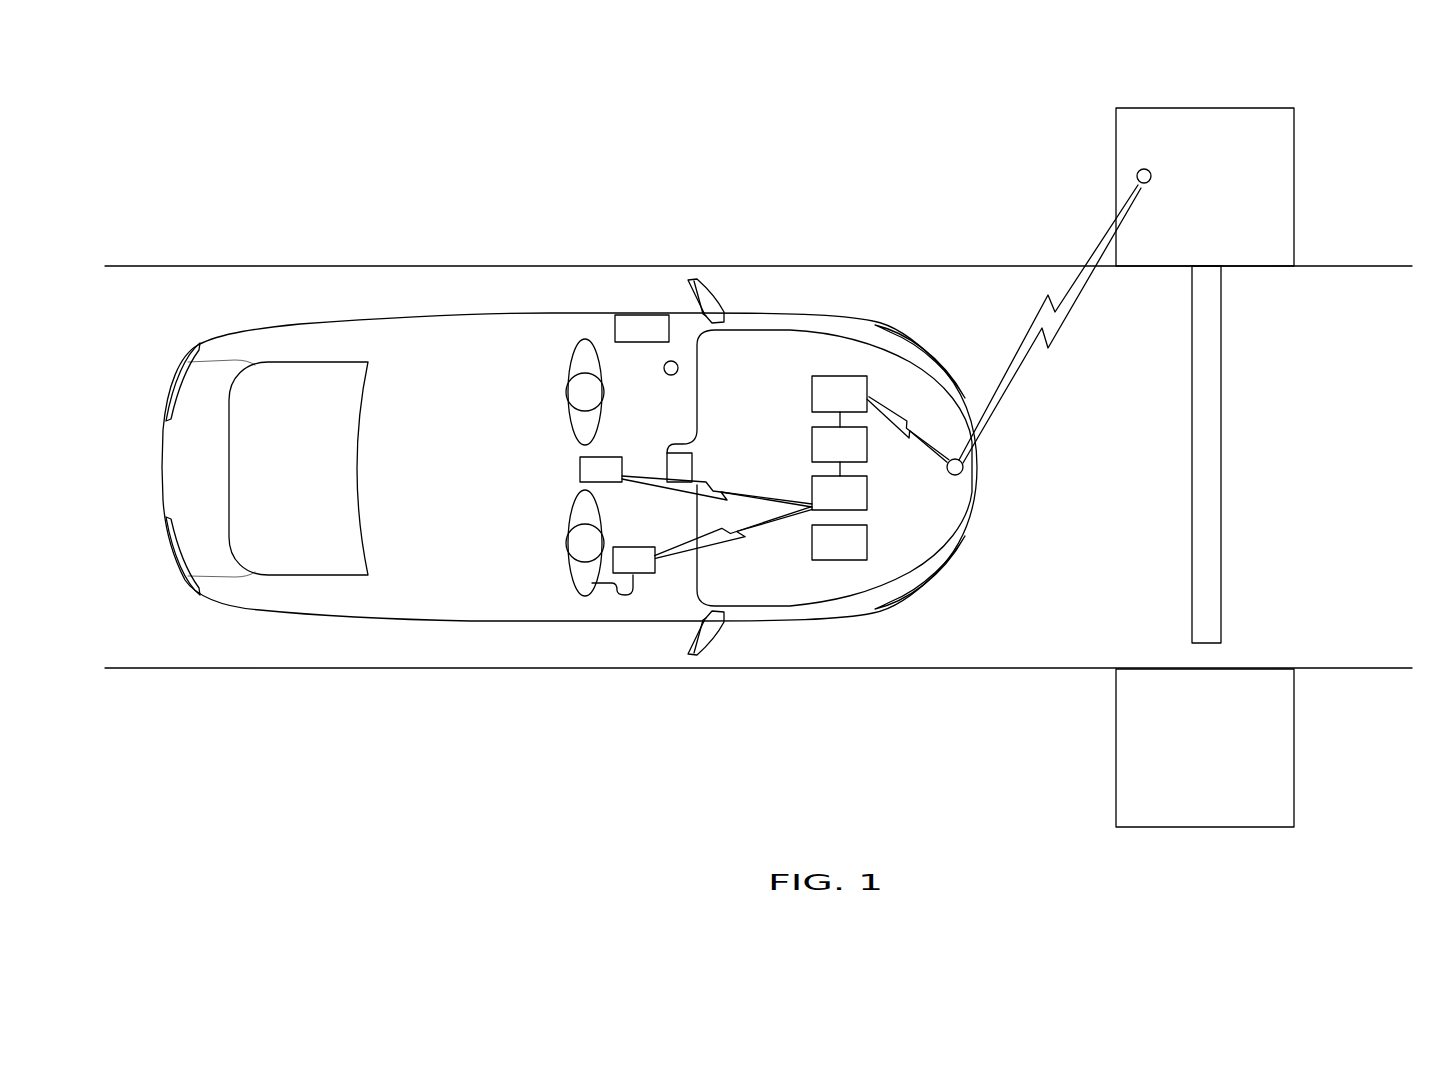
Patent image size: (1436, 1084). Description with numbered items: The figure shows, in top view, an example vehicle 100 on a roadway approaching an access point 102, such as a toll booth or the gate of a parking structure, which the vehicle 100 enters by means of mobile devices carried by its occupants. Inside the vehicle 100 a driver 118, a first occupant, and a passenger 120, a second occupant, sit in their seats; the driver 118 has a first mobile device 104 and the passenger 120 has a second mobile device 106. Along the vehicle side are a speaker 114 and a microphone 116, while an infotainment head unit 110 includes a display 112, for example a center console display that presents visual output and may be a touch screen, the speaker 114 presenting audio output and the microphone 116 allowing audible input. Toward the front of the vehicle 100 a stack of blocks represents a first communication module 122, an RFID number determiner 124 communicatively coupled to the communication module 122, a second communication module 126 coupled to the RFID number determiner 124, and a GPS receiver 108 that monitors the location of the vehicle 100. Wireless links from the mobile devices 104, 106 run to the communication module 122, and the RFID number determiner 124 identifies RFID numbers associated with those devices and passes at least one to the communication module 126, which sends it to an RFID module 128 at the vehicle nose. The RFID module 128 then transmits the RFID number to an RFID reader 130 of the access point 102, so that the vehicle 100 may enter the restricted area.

The vehicle 100 is at (175, 599).
The access point 102 is at (1333, 243).
The mobile device 104 is at (580, 468).
The mobile device 106 is at (640, 565).
The GPS receiver 108 is at (822, 554).
The infotainment head unit 110 is at (714, 389).
The display 112 is at (673, 463).
The speaker 114 is at (640, 326).
The microphone 116 is at (674, 361).
The driver 118 is at (567, 391).
The passenger 120 is at (567, 548).
The communication module 122 is at (822, 504).
The RFID number determiner 124 is at (822, 456).
The communication module 126 is at (822, 406).
The RFID module 128 is at (962, 471).
The RFID reader 130 is at (1152, 176).